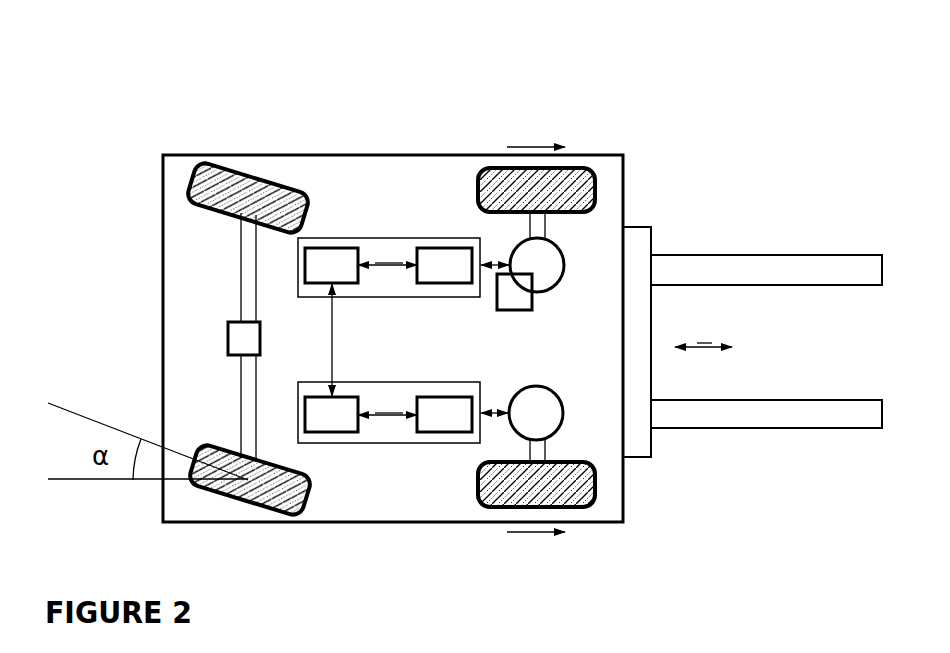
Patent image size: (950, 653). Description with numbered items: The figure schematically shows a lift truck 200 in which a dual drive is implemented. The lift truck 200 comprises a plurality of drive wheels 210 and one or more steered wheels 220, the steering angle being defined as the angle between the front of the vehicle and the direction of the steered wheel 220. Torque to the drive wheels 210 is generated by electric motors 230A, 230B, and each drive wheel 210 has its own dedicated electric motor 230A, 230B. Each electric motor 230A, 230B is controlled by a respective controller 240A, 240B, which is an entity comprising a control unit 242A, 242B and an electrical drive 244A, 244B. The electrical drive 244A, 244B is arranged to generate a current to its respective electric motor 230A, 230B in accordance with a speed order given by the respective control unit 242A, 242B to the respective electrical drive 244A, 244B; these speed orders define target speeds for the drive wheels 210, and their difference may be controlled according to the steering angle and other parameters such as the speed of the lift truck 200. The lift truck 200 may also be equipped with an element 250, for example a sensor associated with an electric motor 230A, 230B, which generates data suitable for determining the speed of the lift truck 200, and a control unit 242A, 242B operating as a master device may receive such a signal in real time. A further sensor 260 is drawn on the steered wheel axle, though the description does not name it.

The lift truck 200 is at (158, 76).
The drive wheel 210 is at (558, 168).
The steered wheel 220 is at (250, 170).
The electric motor 230A is at (546, 290).
The electric motor 230B is at (577, 375).
The controller 240A is at (377, 261).
The controller 240B is at (377, 418).
The control unit 242A is at (310, 284).
The control unit 242B is at (312, 397).
The electrical drive 244A is at (440, 248).
The electrical drive 244B is at (437, 433).
The sensor 250 is at (502, 311).
The steering angle sensor 260 is at (235, 358).